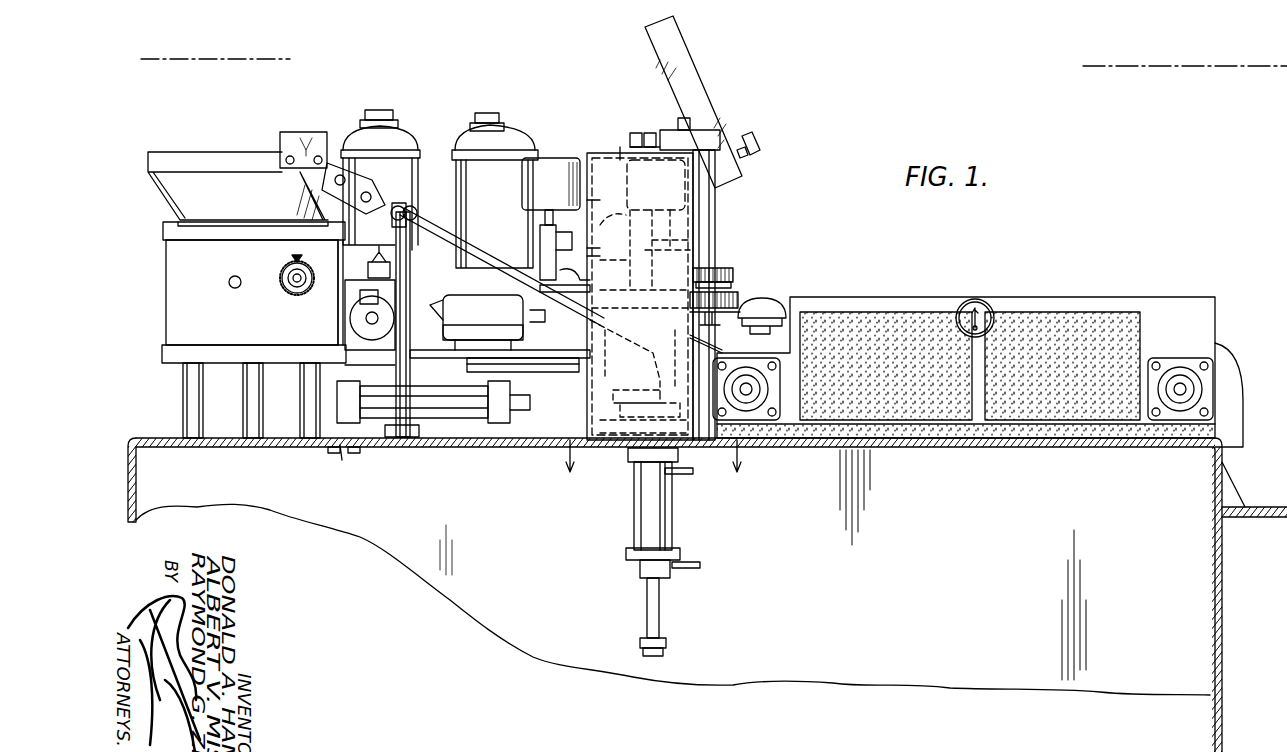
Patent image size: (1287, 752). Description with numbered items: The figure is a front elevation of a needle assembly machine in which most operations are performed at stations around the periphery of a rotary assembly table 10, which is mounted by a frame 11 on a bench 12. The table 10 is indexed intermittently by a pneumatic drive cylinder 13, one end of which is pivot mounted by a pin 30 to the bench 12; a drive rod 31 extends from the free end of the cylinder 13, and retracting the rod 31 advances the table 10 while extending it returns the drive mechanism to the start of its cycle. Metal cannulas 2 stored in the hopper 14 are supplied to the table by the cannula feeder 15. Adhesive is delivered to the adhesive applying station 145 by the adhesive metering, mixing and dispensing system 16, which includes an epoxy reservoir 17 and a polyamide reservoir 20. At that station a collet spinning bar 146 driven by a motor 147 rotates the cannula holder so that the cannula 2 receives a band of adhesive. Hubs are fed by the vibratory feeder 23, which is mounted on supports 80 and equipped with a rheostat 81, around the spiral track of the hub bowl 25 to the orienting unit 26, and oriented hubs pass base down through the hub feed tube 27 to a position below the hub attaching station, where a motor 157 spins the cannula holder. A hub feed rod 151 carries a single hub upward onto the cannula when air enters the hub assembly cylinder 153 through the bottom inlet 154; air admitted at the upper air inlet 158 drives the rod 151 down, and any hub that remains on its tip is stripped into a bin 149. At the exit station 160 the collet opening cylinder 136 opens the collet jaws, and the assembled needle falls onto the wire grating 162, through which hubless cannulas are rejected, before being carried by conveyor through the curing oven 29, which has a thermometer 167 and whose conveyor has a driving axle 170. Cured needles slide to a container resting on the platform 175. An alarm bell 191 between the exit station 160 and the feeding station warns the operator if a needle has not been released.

The metal cannula 2 is at (141, 59).
The rotary assembly table 10 is at (760, 280).
The frame 11 is at (600, 160).
The bench 12 is at (942, 452).
The pneumatic drive cylinder 13 is at (416, 437).
The hopper 14 is at (690, 66).
The cannula feeder 15 is at (738, 121).
The adhesive metering, mixing, and dispensing system 16 is at (525, 138).
The epoxy reservoir 17 is at (470, 178).
The polyamide reservoir 20 is at (415, 165).
The vibratory feeder 23 is at (178, 308).
The hub bowl 25 is at (220, 165).
The orienting unit 26 is at (332, 140).
The hub feed tube 27 is at (450, 198).
The curing oven 29 is at (876, 306).
The pin 30 is at (346, 440).
The drive rod 31 is at (565, 420).
The supports 80 is at (184, 401).
The rheostat 81 is at (292, 292).
The collet opening cylinder 136 is at (713, 192).
The adhesive applying station 145 is at (584, 273).
The collet spinning bar 146 is at (555, 248).
The motor 147 is at (522, 184).
The bin 149 is at (628, 440).
The hub feed rod 151 is at (647, 598).
The hub assembly cylinder 153 is at (652, 522).
The bottom inlet 154 is at (690, 568).
The motor 157 is at (608, 214).
The upper air inlet 158 is at (685, 478).
The exit station 160 is at (721, 263).
The wire grating 162 is at (740, 344).
The thermometer 167 is at (980, 300).
The driving axle 170 is at (1180, 385).
The platform 175 is at (1265, 518).
The alarm bell 191 is at (775, 302).